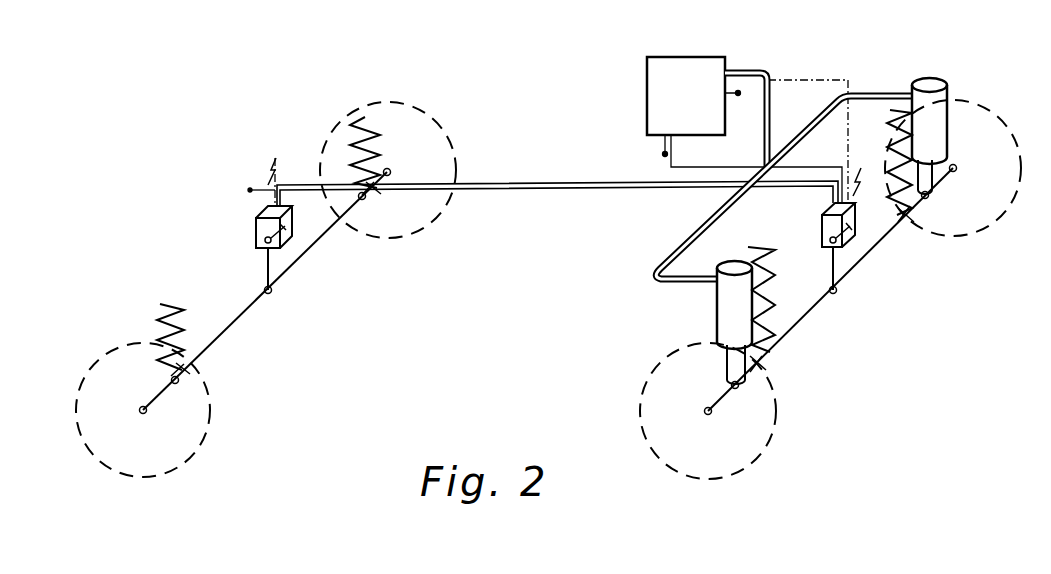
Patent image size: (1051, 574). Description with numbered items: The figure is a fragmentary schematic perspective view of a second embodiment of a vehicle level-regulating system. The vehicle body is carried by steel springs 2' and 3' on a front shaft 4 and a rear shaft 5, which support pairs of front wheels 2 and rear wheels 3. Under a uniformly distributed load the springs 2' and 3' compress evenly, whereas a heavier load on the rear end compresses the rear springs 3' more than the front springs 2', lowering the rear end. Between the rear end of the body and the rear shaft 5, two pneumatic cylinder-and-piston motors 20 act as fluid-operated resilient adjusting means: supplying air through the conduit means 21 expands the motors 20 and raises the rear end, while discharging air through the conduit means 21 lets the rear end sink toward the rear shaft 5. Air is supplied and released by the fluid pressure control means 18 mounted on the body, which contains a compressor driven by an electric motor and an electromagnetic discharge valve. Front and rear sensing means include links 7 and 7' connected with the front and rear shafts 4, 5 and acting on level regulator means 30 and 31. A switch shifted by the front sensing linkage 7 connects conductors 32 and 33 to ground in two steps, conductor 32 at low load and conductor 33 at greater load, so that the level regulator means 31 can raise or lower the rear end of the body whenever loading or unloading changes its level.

The front wheels 2 is at (280, 289).
The front steel springs 2' is at (292, 224).
The rear wheels 3 is at (841, 289).
The rear steel springs 3' is at (830, 230).
The front shaft 4 is at (247, 310).
The rear shaft 5 is at (808, 306).
The front sensing link 7 is at (399, 222).
The rear sensing link 7' is at (876, 234).
The fluid pressure control means 18 is at (662, 62).
The pneumatic cylinder-and-piston motors 20 is at (728, 303).
The conduit means 21 is at (797, 80).
The front level regulator means 30 is at (256, 231).
The rear level regulator means 31 is at (856, 228).
The conductor 32 is at (559, 190).
The conductor 33 is at (568, 181).